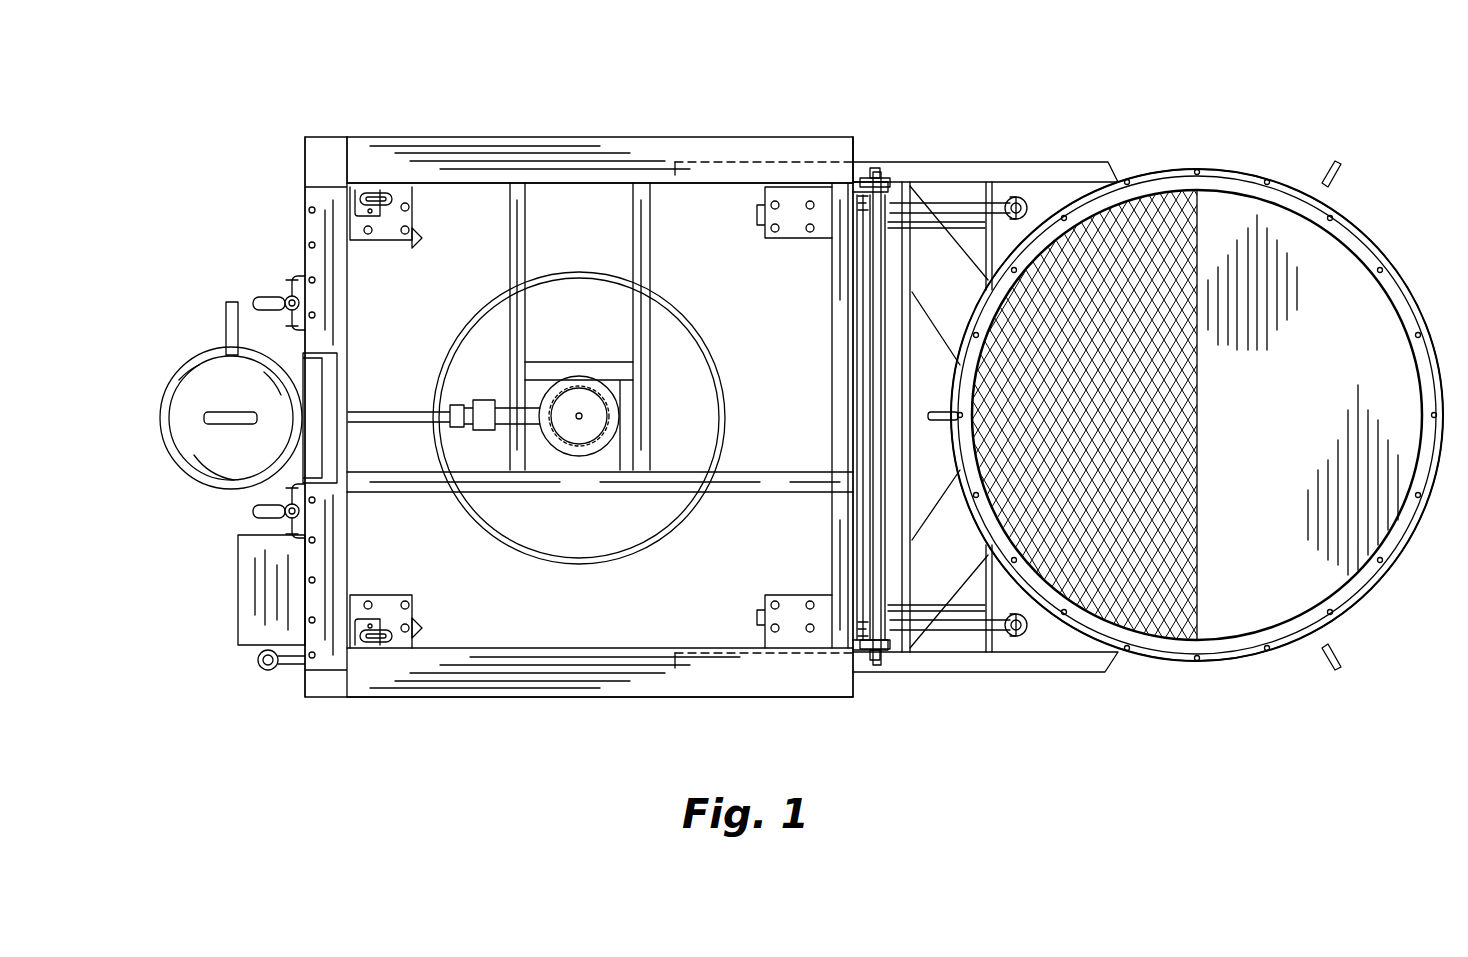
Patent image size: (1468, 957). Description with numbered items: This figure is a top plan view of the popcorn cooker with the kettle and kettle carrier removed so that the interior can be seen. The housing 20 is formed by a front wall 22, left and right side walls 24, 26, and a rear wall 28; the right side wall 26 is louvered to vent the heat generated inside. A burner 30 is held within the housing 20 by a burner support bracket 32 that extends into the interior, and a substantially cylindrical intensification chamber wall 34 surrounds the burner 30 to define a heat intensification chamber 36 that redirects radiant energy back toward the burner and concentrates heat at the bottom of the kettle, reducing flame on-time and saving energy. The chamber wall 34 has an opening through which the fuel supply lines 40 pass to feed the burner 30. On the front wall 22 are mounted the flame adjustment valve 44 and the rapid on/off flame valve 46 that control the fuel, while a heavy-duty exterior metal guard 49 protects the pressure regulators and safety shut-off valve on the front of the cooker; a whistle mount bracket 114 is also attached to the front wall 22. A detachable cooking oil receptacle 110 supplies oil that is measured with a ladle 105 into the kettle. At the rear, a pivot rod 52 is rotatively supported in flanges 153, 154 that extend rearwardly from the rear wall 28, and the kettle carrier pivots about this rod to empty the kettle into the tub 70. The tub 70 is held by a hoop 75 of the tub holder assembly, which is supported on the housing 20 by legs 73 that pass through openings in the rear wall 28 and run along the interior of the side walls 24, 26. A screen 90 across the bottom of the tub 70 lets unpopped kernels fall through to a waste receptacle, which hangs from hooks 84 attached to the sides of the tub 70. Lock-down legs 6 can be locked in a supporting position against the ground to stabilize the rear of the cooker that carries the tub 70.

The legs 6 is at (965, 208).
The housing 20 is at (650, 165).
The front wall 22 is at (313, 225).
The left side wall 24 is at (528, 137).
The right side wall 26 is at (462, 690).
The rear wall 28 is at (840, 610).
The burner 30 is at (578, 455).
The burner support bracket 32 is at (650, 248).
The intensification chamber wall 34 is at (690, 308).
The heat intensification chamber 36 is at (682, 360).
The fuel supply lines 40 is at (392, 415).
The flame adjustment valve 44 is at (255, 512).
The rapid on/off flame valve 46 is at (270, 300).
The exterior metal guard 49 is at (245, 600).
The pivot rod 52 is at (880, 183).
The tub 70 is at (1335, 320).
The legs 73 is at (960, 165).
The hoop 75 is at (1235, 665).
The hooks 84 is at (1325, 180).
The screen 90 is at (1158, 215).
The ladle 105 is at (235, 310).
The cooking oil receptacle 110 is at (222, 465).
The whistle mount bracket 114 is at (268, 672).
The flange 153 is at (870, 178).
The flange 154 is at (887, 655).